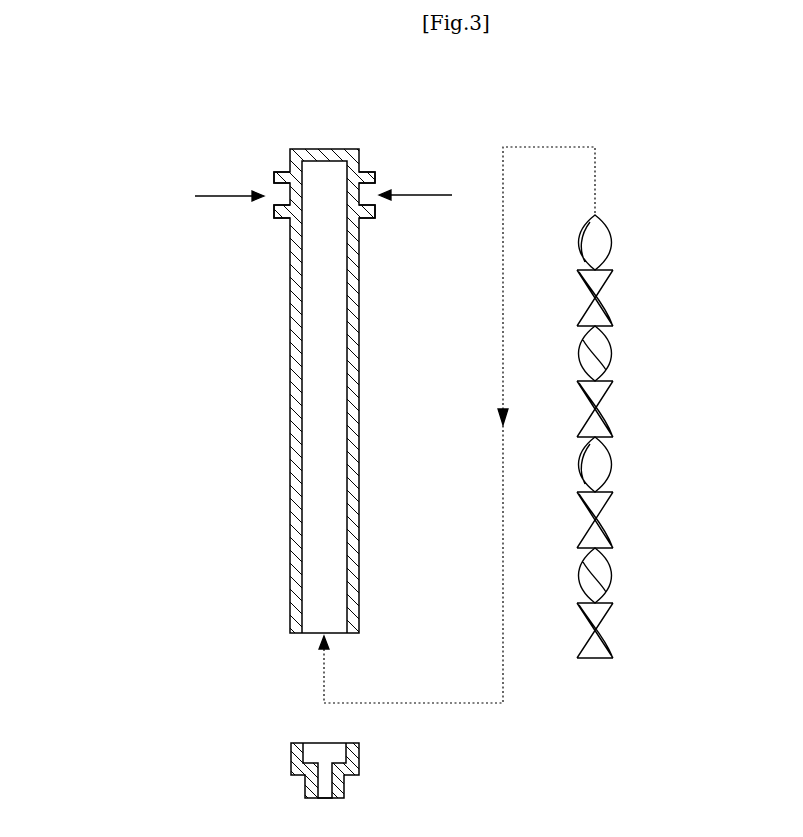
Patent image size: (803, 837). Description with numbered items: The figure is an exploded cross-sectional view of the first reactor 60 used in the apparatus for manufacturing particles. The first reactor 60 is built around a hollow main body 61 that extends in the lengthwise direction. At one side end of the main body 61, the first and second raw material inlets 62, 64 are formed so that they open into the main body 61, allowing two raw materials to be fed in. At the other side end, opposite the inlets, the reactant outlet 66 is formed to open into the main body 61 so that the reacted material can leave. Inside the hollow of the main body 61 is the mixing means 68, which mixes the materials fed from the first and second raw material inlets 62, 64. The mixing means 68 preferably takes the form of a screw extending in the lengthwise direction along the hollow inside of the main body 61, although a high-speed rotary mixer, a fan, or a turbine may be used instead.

The first reactor 60 is at (364, 411).
The hollow main body 61 is at (350, 462).
The first raw material inlet 62 is at (280, 172).
The second raw material inlet 64 is at (368, 172).
The reactant outlet 66 is at (347, 790).
The mixing means 68 is at (600, 348).